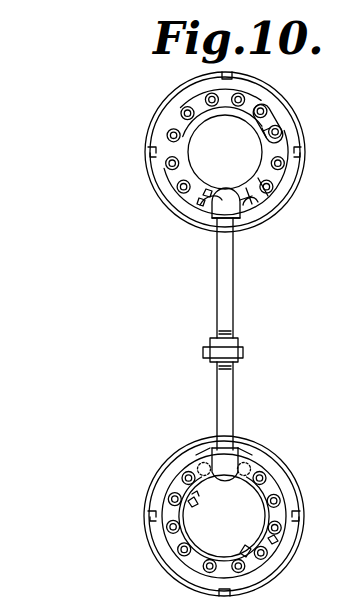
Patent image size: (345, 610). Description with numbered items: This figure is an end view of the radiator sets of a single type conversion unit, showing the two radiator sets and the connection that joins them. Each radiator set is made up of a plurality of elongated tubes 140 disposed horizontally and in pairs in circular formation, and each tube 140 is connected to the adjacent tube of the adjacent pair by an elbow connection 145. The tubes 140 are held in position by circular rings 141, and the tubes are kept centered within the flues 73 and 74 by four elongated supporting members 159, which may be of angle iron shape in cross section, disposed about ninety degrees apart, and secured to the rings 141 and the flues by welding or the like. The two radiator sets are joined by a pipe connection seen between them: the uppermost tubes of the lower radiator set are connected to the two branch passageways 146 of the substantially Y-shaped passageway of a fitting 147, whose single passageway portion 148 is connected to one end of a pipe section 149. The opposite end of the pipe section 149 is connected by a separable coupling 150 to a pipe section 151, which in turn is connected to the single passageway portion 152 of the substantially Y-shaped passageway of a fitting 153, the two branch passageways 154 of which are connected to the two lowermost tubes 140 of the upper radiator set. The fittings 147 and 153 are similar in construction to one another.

The flue 73 is at (147, 125).
The flue 74 is at (146, 542).
The elongated tubes 140 is at (262, 195).
The circular ring 141 is at (175, 172).
The elbow connection 145 is at (279, 119).
The branch passageways 146 is at (252, 452).
The fitting 147 is at (204, 448).
The single passageway portion 148 is at (234, 450).
The pipe section 149 is at (236, 384).
The separable coupling 150 is at (242, 350).
The pipe section 151 is at (216, 296).
The single passageway portion 152 is at (238, 214).
The fitting 153 is at (218, 224).
The branch passageways 154 is at (212, 211).
The elongated supporting members 159 is at (236, 76).